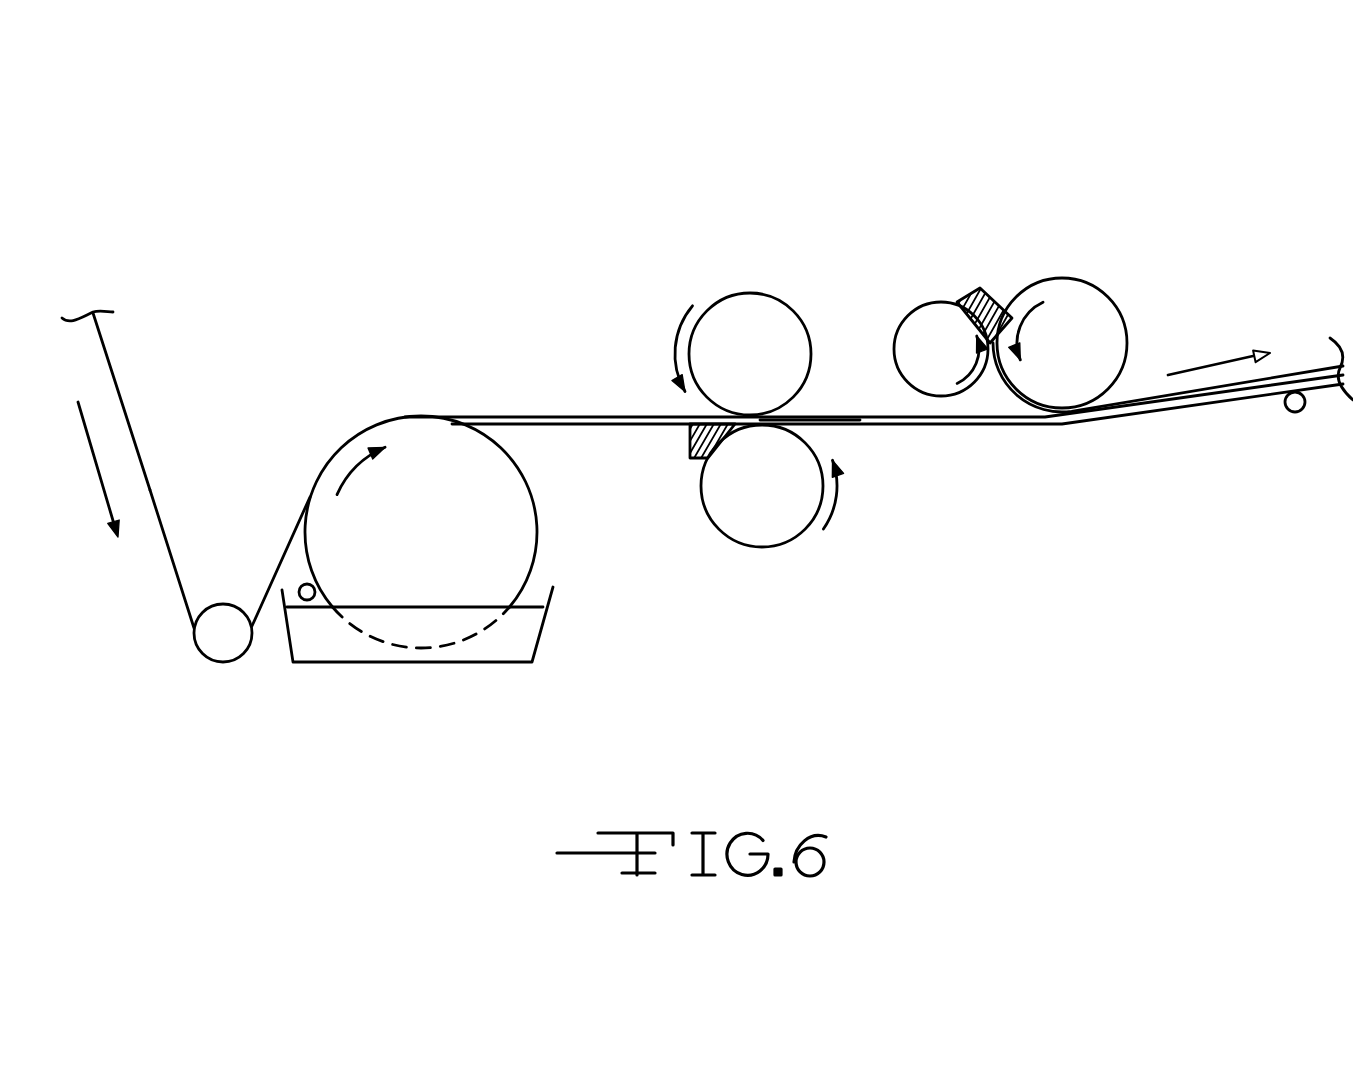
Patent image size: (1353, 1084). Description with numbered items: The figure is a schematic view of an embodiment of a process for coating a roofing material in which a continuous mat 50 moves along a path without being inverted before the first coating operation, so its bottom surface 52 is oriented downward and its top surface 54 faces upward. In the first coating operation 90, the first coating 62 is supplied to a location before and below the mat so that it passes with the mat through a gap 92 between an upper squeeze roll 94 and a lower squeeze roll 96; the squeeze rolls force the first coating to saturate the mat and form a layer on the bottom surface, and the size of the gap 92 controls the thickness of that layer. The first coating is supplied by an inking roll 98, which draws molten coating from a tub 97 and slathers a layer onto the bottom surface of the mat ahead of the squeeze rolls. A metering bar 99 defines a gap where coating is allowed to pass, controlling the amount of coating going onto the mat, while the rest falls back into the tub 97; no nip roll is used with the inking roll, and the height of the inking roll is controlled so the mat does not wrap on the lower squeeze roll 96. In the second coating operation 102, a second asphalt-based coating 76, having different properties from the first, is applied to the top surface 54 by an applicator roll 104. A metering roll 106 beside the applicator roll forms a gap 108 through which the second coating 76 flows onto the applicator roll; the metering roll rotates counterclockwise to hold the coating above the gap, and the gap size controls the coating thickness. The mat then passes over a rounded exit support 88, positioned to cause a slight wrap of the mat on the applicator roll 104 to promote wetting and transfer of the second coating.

The continuous mat 50 is at (118, 395).
The bottom surface 52 is at (165, 557).
The top surface 54 is at (155, 503).
The metering bar 99 is at (299, 587).
The inking roll 98 is at (408, 527).
The tub 97 is at (345, 642).
The first coating operation 90 is at (620, 333).
The upper squeeze roll 94 is at (728, 364).
The lower squeeze roll 96 is at (745, 490).
The gap 92 is at (803, 405).
The first coating 62 is at (692, 442).
The second coating operation 102 is at (1080, 258).
The metering roll 106 is at (916, 360).
The applicator roll 104 is at (1040, 367).
The second asphalt-based coating 76 is at (990, 293).
The gap 108 is at (990, 373).
The rounded exit support 88 is at (1298, 412).